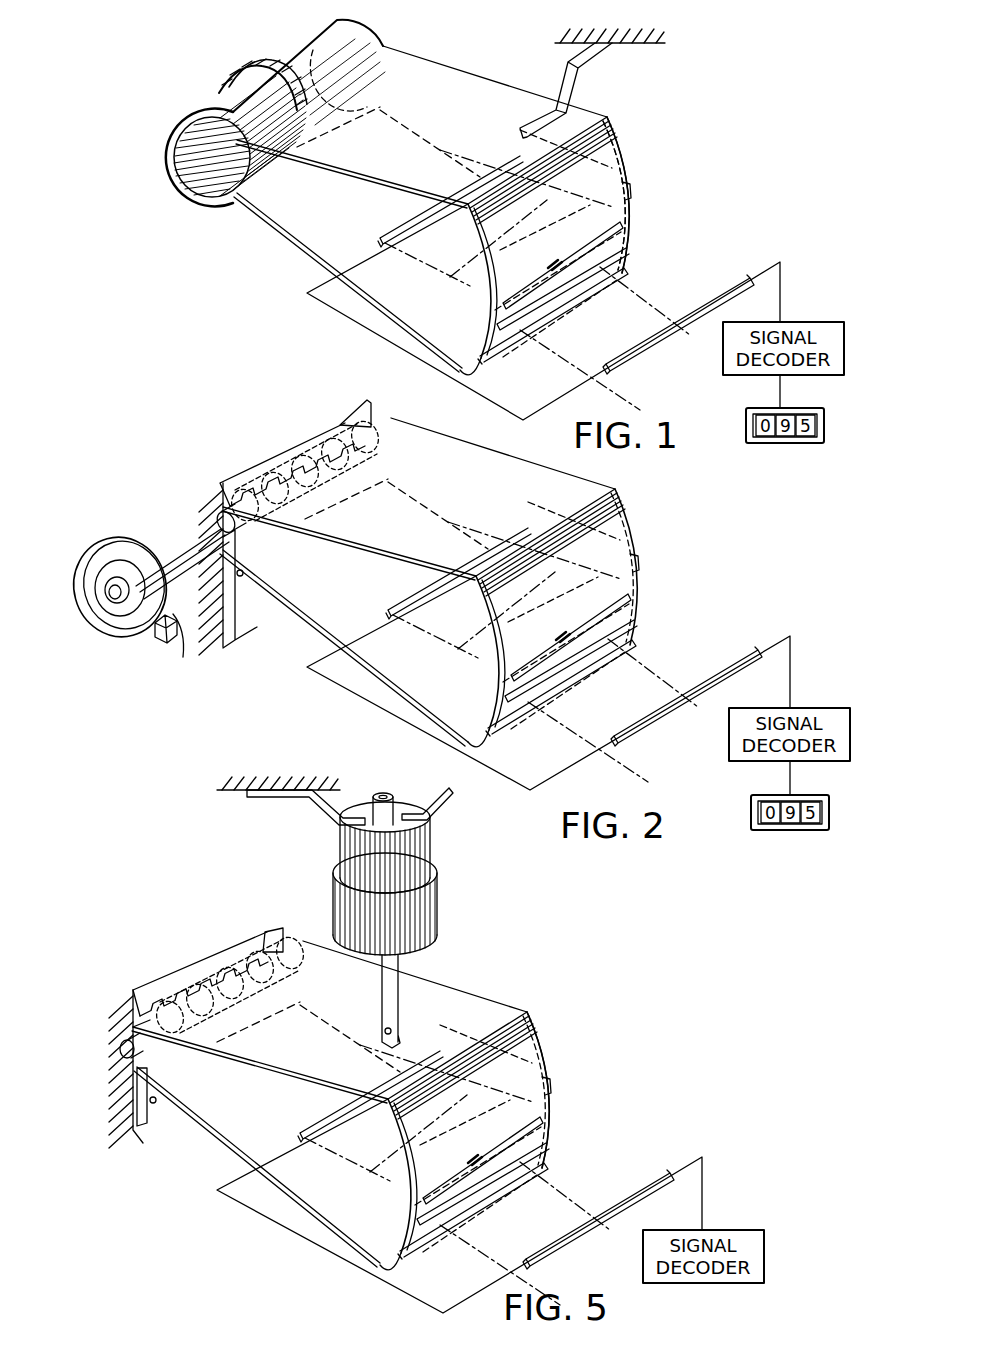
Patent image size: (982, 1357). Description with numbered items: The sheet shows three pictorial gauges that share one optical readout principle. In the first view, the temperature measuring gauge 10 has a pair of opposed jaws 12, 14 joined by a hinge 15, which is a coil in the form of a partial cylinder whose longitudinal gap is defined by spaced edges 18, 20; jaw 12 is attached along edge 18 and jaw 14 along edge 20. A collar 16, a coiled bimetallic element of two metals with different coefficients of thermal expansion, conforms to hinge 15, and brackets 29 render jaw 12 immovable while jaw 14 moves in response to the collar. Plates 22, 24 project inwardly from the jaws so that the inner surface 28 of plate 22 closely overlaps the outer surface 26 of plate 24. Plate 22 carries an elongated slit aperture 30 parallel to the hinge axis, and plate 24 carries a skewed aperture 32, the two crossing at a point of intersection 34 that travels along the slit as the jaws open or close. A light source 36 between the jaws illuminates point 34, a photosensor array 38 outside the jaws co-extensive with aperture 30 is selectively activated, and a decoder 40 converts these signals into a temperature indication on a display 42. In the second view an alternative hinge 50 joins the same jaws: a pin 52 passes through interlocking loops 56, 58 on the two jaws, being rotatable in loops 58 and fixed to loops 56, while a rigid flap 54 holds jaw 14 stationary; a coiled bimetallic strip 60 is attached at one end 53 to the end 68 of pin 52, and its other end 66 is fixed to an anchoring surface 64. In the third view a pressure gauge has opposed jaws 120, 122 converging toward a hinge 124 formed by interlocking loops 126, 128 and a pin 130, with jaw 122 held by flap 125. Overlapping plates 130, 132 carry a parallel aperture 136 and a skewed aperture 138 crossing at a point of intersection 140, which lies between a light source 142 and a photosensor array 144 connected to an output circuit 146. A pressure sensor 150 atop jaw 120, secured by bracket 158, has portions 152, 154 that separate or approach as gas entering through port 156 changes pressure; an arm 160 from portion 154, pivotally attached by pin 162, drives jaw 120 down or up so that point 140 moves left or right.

In FIG. 1, the temperature measuring gauge 10 is at (493, 44).
In FIG. 1, the jaw 12 is at (347, 157).
In FIG. 2, the jaw 12 is at (490, 463).
In FIG. 1, the jaw 14 is at (330, 250).
In FIG. 2, the jaw 14 is at (320, 618).
In FIG. 1, the hinge 15 is at (292, 47).
In FIG. 1, the collar 16 is at (240, 72).
In FIG. 1, the edge 18 is at (386, 44).
In FIG. 1, the edge 20 is at (236, 204).
In FIG. 1, the plate 22 is at (618, 128).
In FIG. 1, the plate 24 is at (445, 367).
In FIG. 1, the outer surface 26 is at (567, 302).
In FIG. 1, the inner surface 28 is at (634, 162).
In FIG. 1, the brackets 29 is at (575, 82).
In FIG. 1, the aperture 30 is at (625, 224).
In FIG. 1, the aperture 32 is at (632, 195).
In FIG. 1, the point of intersection 34 is at (555, 265).
In FIG. 1, the light source 36 is at (396, 232).
In FIG. 1, the photosensor array 38 is at (643, 347).
In FIG. 1, the decoder 40 is at (844, 351).
In FIG. 1, the display 42 is at (826, 433).
In FIG. 2, the hinge 50 is at (302, 446).
In FIG. 2, the pin 52 is at (180, 537).
In FIG. 2, the end 53 is at (106, 605).
In FIG. 2, the rigid flap 54 is at (242, 582).
In FIG. 2, the loops 56 is at (347, 413).
In FIG. 2, the loops 58 is at (244, 524).
In FIG. 2, the coiled bimetallic strip 60 is at (73, 580).
In FIG. 2, the anchoring surface 64 is at (157, 638).
In FIG. 2, the end 66 is at (183, 657).
In FIG. 2, the end 68 is at (112, 606).
In FIG. 5, the jaw 120 is at (443, 1010).
In FIG. 5, the jaw 122 is at (227, 1133).
In FIG. 5, the hinge 124 is at (213, 977).
In FIG. 5, the flap 125 is at (150, 1108).
In FIG. 5, the interlocking loops 126 is at (263, 957).
In FIG. 5, the interlocking loops 128 is at (153, 1058).
In FIG. 5, the pin 130 is at (120, 1052).
In FIG. 5, the plate 132 is at (473, 1224).
In FIG. 5, the aperture 136 is at (574, 1099).
In FIG. 5, the aperture 138 is at (483, 1183).
In FIG. 5, the point of intersection 140 is at (534, 1143).
In FIG. 5, the light source 142 is at (350, 1096).
In FIG. 5, the photosensor array 144 is at (612, 1195).
In FIG. 5, the output circuit 146 is at (767, 1260).
In FIG. 5, the pressure sensor 150 is at (360, 901).
In FIG. 5, the portion 152 is at (337, 850).
In FIG. 5, the portion 154 is at (441, 910).
In FIG. 5, the port 156 is at (388, 792).
In FIG. 5, the bracket 158 is at (448, 793).
In FIG. 5, the arm 160 is at (399, 972).
In FIG. 5, the pin 162 is at (381, 1037).